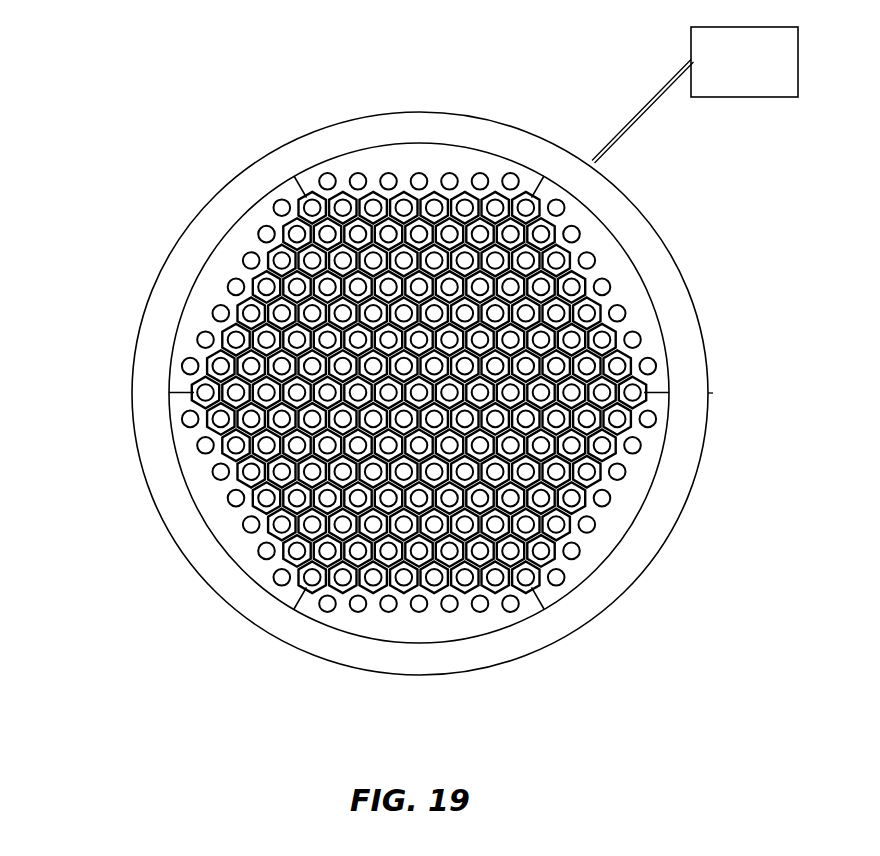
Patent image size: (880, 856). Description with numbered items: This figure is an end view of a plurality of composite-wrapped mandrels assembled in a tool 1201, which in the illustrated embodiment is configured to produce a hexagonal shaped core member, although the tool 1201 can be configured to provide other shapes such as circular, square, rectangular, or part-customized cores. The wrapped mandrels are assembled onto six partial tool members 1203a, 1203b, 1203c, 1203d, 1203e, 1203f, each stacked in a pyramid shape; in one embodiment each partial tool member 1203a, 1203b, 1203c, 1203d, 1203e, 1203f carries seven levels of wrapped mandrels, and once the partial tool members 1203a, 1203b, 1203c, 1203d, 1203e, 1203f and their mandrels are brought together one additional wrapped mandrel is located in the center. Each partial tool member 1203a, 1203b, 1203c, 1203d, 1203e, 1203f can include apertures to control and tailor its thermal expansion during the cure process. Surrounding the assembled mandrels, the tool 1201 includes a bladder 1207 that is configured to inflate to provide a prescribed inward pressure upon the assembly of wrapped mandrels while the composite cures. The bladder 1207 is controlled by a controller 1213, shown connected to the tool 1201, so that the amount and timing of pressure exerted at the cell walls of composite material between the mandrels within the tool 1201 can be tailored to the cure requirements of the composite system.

The tool 1201 is at (209, 94).
The partial tool member 1203a is at (428, 152).
The partial tool member 1203b is at (617, 263).
The partial tool member 1203c is at (633, 495).
The partial tool member 1203d is at (458, 628).
The partial tool member 1203e is at (213, 500).
The partial tool member 1203f is at (200, 300).
The bladder 1207 is at (683, 328).
The controller 1213 is at (719, 75).